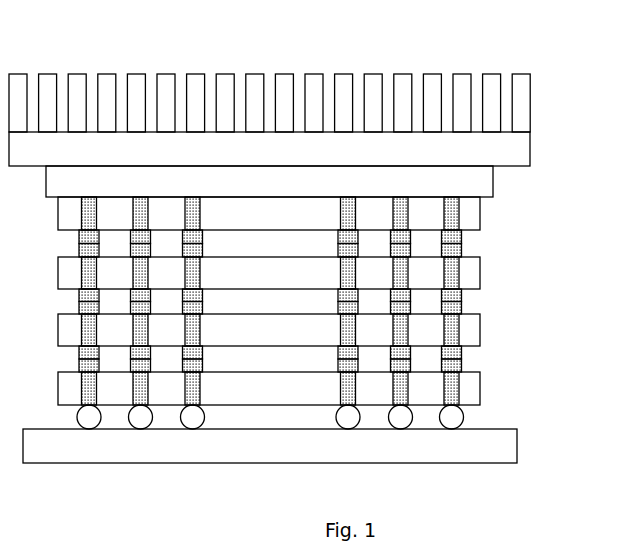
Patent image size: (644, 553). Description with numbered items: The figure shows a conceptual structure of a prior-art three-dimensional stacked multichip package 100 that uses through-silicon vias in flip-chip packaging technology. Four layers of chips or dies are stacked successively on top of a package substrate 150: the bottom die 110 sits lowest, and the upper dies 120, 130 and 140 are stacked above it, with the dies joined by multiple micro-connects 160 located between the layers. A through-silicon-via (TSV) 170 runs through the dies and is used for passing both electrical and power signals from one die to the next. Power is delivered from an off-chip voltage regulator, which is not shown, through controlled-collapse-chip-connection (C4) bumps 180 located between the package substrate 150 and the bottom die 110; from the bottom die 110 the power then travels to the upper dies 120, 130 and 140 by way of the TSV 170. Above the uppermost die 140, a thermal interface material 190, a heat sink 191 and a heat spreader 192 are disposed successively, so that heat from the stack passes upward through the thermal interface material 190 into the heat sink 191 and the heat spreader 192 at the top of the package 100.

The 3D stacked multichip package 100 is at (319, 241).
The bottom die 110 is at (280, 400).
The die 120 is at (282, 340).
The die 130 is at (281, 282).
The die 140 is at (284, 224).
The package substrate 150 is at (279, 458).
The micro-connects 160 is at (458, 363).
The through-silicon-via (TSV) 170 is at (452, 277).
The controlled-collapse-chip-connection (C4) bumps 180 is at (455, 418).
The thermal interface material 190 is at (284, 188).
The heat sink 191 is at (512, 152).
The heat spreader 192 is at (515, 117).